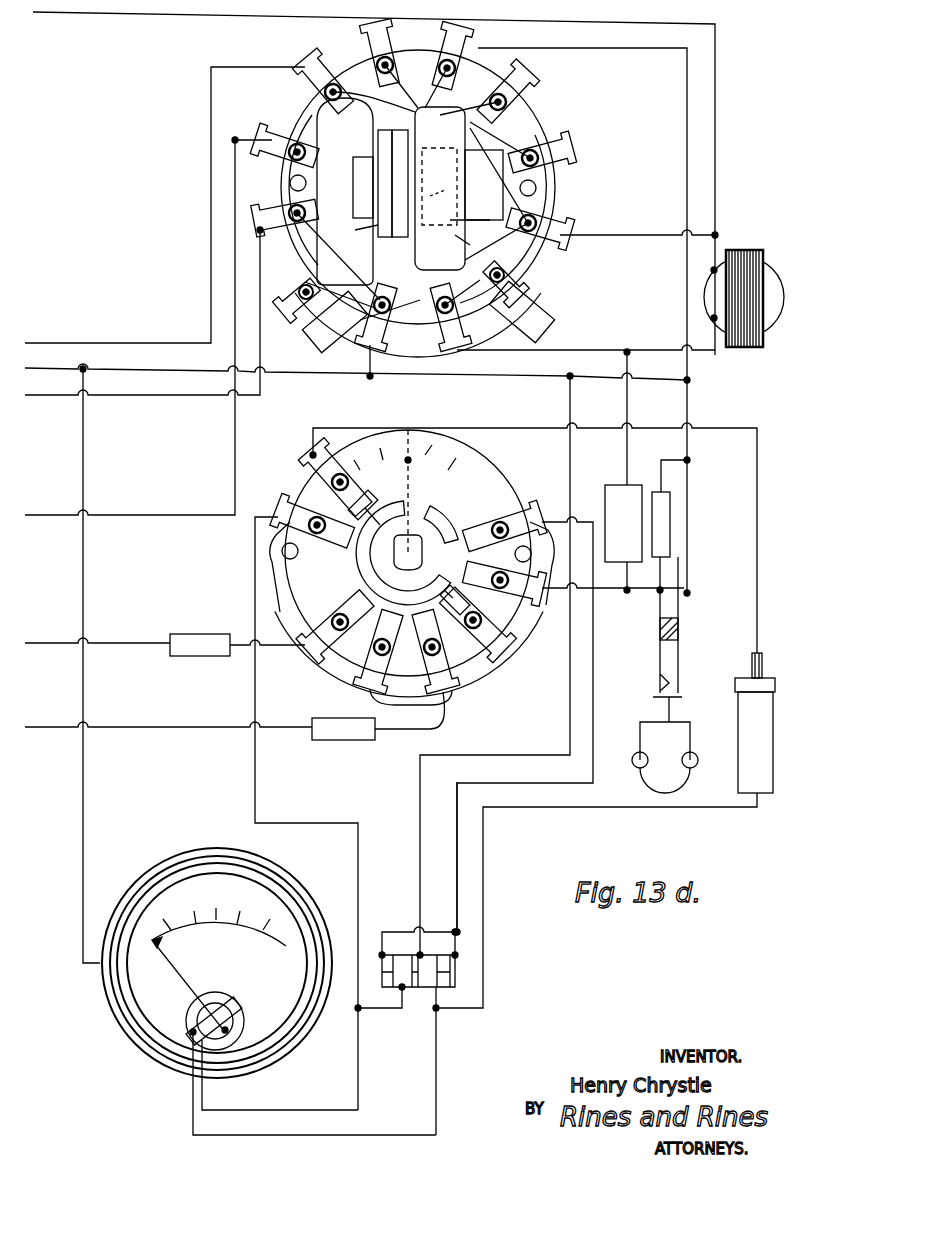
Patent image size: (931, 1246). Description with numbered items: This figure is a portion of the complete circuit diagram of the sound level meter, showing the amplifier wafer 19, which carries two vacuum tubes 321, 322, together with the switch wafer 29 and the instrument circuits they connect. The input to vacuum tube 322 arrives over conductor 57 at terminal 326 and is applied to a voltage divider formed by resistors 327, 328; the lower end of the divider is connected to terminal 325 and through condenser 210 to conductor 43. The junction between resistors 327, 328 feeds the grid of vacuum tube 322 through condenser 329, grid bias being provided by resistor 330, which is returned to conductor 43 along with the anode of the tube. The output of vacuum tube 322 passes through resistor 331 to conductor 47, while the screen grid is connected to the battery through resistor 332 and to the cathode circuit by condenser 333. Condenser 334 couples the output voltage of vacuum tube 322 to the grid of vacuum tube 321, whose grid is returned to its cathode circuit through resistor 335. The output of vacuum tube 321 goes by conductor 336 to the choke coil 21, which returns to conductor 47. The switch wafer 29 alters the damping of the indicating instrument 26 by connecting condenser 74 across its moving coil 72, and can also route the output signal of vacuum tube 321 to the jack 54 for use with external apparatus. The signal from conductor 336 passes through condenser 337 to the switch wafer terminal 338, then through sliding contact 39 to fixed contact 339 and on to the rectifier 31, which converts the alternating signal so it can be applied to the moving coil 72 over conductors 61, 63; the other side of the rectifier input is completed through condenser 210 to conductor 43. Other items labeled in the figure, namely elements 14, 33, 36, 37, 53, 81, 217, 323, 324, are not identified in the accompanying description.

The resistor 14 is at (664, 510).
The amplifier wafer 19 is at (548, 102).
The choke coil 21 is at (740, 250).
The indicating instrument 26 is at (118, 1028).
The switch wafer 29 is at (535, 462).
The rectifier 31 is at (412, 1000).
The meter scale 33 is at (252, 940).
The socket terminal 36 is at (320, 60).
The plug terminal 37 is at (300, 468).
The sliding contact 39 is at (445, 510).
The conductor 43 is at (500, 49).
The conductor 47 is at (57, 5).
The conductor 53 is at (450, 893).
The jack 54 is at (680, 665).
The conductor 57 is at (35, 512).
The conductor 61 is at (358, 1040).
The conductor 63 is at (438, 1042).
The moving coil 72 is at (200, 1022).
The condenser 74 is at (733, 780).
The conductor 81 is at (35, 392).
The condenser 210 is at (35, 366).
The conductor 217 is at (35, 340).
The vacuum tube 321 is at (325, 128).
The vacuum tube 322 is at (430, 252).
The socket terminal 323 is at (275, 212).
The socket terminal 324 is at (300, 262).
The terminal 325 is at (392, 318).
The terminal 326 is at (276, 135).
The resistor 327 is at (372, 165).
The resistor 328 is at (540, 315).
The condenser 329 is at (439, 184).
The resistor 330 is at (417, 55).
The resistor 331 is at (456, 212).
The resistor 332 is at (472, 163).
The condenser 333 is at (441, 235).
The condenser 334 is at (350, 230).
The resistor 335 is at (340, 340).
The conductor 336 is at (541, 356).
The condenser 337 is at (606, 490).
The switch wafer terminal 338 is at (498, 597).
The fixed contact 339 is at (466, 548).